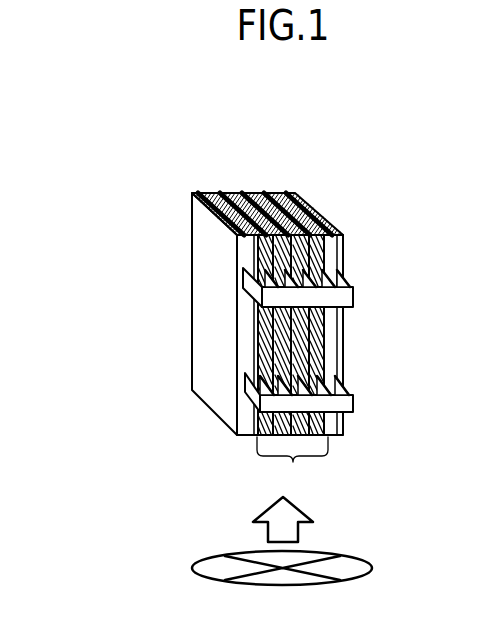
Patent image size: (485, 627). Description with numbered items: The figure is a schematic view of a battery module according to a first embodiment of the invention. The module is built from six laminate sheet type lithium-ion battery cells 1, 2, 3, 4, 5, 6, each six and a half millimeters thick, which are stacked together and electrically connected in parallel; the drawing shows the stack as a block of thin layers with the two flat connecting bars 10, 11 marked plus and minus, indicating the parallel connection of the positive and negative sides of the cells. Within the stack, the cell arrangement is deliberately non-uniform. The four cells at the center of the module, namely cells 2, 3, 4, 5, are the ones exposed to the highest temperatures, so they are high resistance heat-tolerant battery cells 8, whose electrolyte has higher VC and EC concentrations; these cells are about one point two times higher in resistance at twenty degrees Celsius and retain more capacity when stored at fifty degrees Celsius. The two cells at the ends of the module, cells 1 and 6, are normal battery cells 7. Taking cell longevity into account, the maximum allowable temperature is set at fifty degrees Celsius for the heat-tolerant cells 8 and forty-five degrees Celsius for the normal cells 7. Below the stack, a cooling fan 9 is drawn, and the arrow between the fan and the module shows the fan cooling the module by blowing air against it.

The lithium-ion battery cell 1 is at (193, 191).
The lithium-ion battery cell 2 is at (218, 192).
The lithium-ion battery cell 3 is at (233, 192).
The lithium-ion battery cell 4 is at (258, 192).
The lithium-ion battery cell 5 is at (273, 192).
The lithium-ion battery cell 6 is at (293, 192).
The normal battery cell 7 is at (239, 436).
The high resistance heat-tolerant battery cell 8 is at (293, 462).
The cooling fan 9 is at (372, 568).
The positive electrode terminal 10 is at (353, 297).
The negative electrode terminal 11 is at (353, 405).